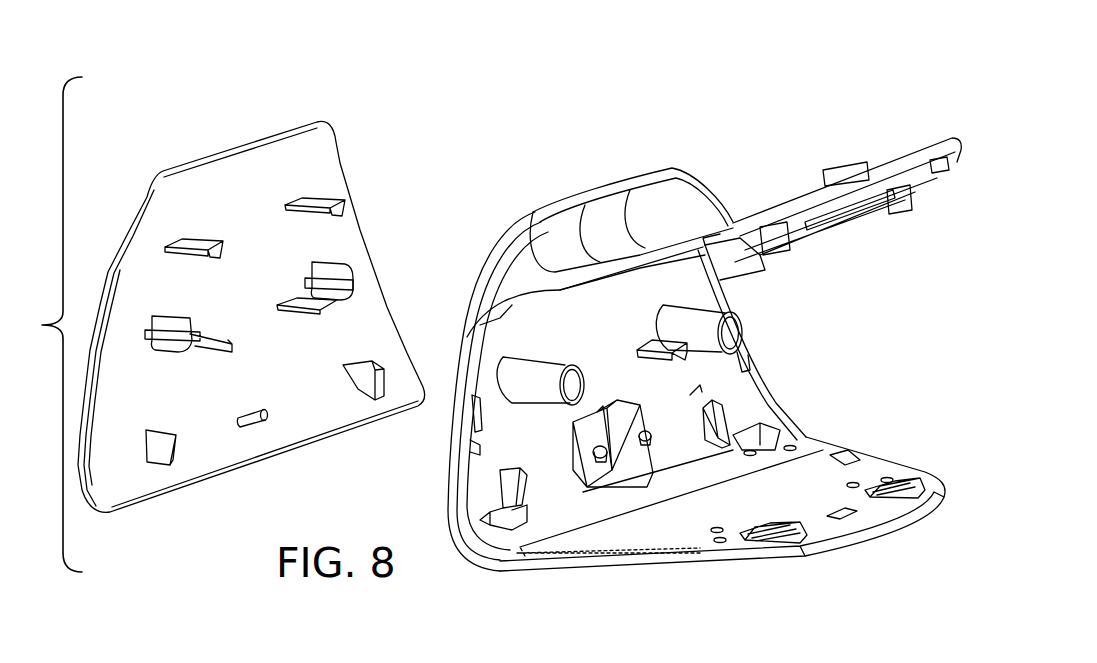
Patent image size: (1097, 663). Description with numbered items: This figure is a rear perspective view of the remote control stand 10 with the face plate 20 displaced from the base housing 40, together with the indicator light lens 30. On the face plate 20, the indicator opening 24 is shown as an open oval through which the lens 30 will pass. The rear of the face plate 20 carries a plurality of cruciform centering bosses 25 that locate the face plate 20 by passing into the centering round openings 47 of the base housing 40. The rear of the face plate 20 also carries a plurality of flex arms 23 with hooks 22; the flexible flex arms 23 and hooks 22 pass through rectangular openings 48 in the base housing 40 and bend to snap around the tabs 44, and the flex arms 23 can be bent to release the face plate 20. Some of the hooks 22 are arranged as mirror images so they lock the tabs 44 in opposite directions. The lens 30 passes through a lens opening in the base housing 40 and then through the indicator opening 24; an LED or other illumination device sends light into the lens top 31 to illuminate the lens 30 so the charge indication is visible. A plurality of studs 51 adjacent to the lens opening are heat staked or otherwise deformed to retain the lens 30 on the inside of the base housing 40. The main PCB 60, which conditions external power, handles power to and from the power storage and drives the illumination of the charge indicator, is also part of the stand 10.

The remote control stand 10 is at (686, 71).
The face plate 20 is at (322, 377).
The hooks 22 is at (313, 302).
The flex arms 23 is at (177, 241).
The indicator opening 24 is at (250, 427).
The centering bosses 25 is at (187, 317).
The indicator light lens 30 is at (550, 506).
The lens top 31 is at (607, 405).
The base housing 40 is at (834, 545).
The tabs 44 is at (640, 360).
The centering round openings 47 is at (745, 333).
The rectangular openings 48 is at (673, 348).
The studs 51 is at (603, 458).
The PCB 60 is at (693, 407).